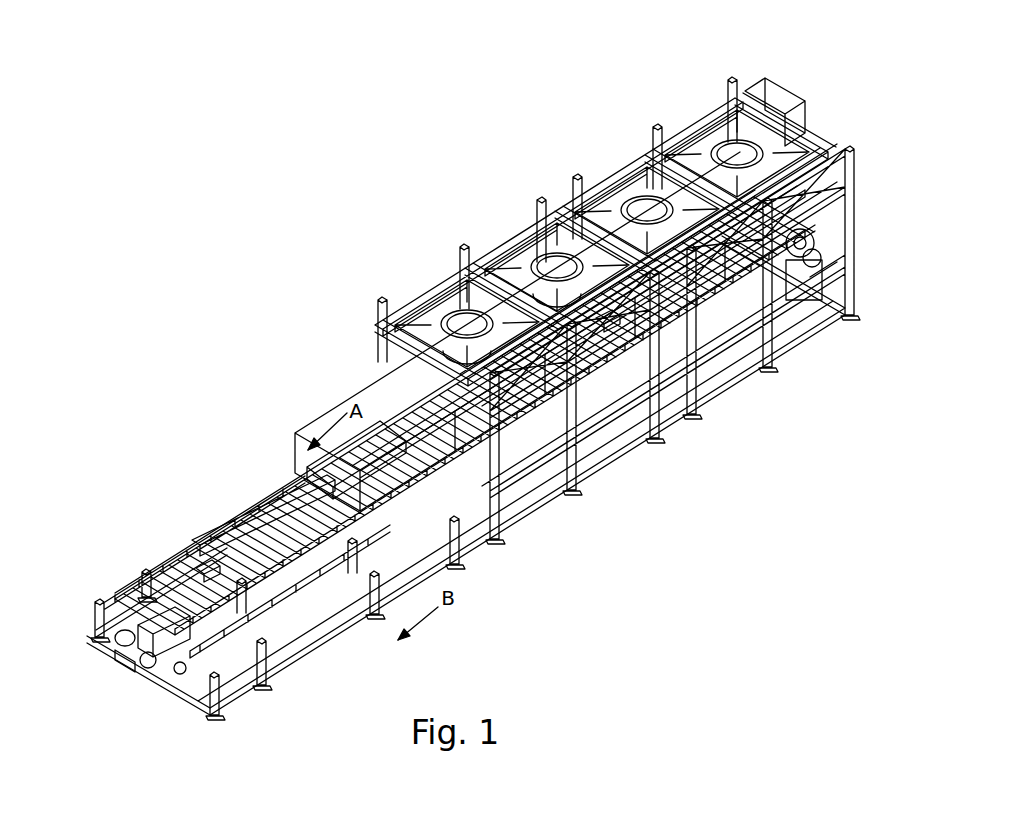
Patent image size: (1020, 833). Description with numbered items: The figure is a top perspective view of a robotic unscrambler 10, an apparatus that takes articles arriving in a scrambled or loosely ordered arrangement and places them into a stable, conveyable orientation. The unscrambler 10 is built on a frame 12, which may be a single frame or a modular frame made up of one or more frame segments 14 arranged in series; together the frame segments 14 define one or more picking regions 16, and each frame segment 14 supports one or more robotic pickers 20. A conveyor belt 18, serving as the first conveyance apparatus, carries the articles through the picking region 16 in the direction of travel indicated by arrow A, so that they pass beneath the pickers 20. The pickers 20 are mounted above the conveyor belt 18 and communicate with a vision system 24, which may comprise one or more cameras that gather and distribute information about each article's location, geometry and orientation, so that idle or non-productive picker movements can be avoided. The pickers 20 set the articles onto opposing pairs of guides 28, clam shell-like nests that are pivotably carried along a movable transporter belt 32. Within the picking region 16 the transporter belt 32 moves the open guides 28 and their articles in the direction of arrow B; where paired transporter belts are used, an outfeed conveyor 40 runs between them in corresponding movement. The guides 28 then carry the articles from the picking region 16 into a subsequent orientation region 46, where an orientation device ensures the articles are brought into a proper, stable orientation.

The robotic unscrambler 10 is at (200, 215).
The frame 12 is at (513, 197).
The frame segment 14 is at (417, 297).
The picking region 16 is at (560, 170).
The conveyor belt 18 is at (307, 477).
The robotic picker 20 is at (466, 320).
The vision system 24 is at (778, 95).
The guide 28 is at (480, 465).
The transporter belt 32 is at (207, 572).
The outfeed conveyor 40 is at (153, 645).
The orientation region 46 is at (220, 510).